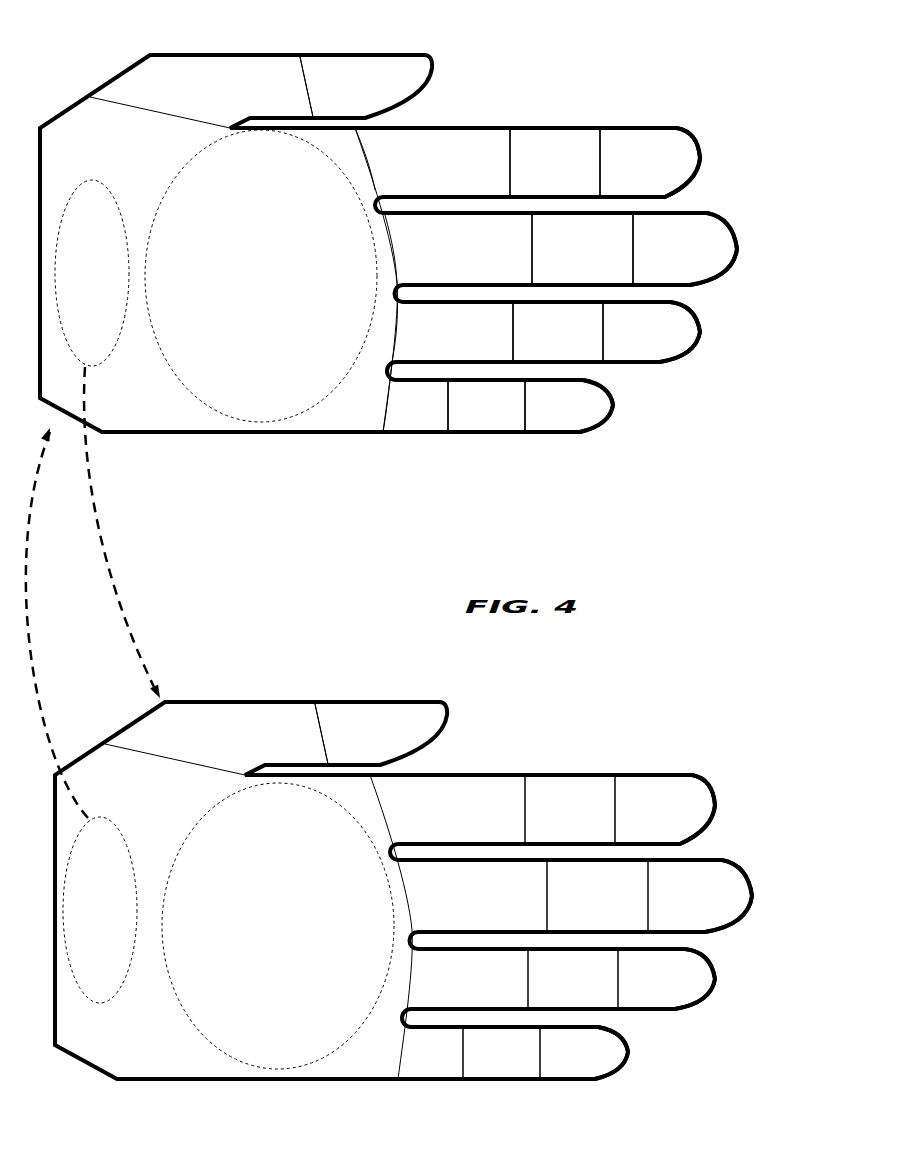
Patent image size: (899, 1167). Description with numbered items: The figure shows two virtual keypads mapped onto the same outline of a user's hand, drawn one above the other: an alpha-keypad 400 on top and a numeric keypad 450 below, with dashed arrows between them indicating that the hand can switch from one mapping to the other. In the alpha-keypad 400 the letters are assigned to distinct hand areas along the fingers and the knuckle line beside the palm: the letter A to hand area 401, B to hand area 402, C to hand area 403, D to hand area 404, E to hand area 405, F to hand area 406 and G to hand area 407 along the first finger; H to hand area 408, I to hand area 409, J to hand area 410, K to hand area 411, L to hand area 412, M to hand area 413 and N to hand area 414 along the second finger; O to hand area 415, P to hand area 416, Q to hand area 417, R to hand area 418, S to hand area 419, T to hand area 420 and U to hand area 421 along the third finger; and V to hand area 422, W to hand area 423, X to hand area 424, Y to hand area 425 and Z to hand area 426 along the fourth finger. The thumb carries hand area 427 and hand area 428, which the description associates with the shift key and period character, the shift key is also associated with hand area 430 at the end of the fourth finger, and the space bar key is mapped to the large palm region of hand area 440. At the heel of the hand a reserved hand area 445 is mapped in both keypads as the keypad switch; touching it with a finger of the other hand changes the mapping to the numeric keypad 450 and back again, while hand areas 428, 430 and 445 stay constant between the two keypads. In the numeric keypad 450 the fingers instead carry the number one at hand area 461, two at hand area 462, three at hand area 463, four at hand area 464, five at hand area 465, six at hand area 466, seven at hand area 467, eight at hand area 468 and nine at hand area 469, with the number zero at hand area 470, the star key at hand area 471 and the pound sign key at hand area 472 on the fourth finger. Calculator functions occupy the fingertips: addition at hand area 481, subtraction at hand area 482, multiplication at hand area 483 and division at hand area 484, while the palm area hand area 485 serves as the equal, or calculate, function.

The alpha-keypad 400 is at (572, 470).
The hand area 401 is at (363, 160).
The hand area 402 is at (428, 186).
The hand area 403 is at (512, 168).
The hand area 404 is at (545, 186).
The hand area 405 is at (600, 165).
The hand area 406 is at (625, 184).
The hand area 407 is at (700, 155).
The hand area 408 is at (392, 250).
The hand area 409 is at (456, 274).
The hand area 410 is at (533, 245).
The hand area 411 is at (575, 274).
The hand area 412 is at (633, 242).
The hand area 413 is at (653, 269).
The hand area 414 is at (737, 249).
The hand area 415 is at (385, 338).
The hand area 416 is at (440, 351).
The hand area 417 is at (513, 347).
The hand area 418 is at (550, 351).
The hand area 419 is at (603, 318).
The hand area 420 is at (632, 349).
The hand area 421 is at (700, 332).
The hand area 422 is at (388, 407).
The hand area 423 is at (403, 424).
The hand area 424 is at (448, 413).
The hand area 425 is at (475, 424).
The hand area 426 is at (523, 413).
The hand area 427 is at (380, 754).
The hand area 428 is at (260, 753).
The hand area 430 is at (540, 424).
The hand area 440 is at (269, 299).
The hand area 445 is at (115, 942).
The numeric keypad 450 is at (540, 742).
The hand area 461 is at (440, 829).
The hand area 462 is at (562, 829).
The hand area 463 is at (640, 829).
The hand area 464 is at (470, 919).
The hand area 465 is at (590, 919).
The hand area 466 is at (670, 919).
The hand area 467 is at (458, 997).
The hand area 468 is at (565, 997).
The hand area 469 is at (645, 997).
The hand area 470 is at (490, 1069).
The hand area 471 is at (418, 1066).
The hand area 472 is at (555, 1069).
The hand area 481 is at (705, 790).
The hand area 482 is at (741, 873).
The hand area 483 is at (717, 978).
The hand area 484 is at (628, 1050).
The hand area 485 is at (291, 944).